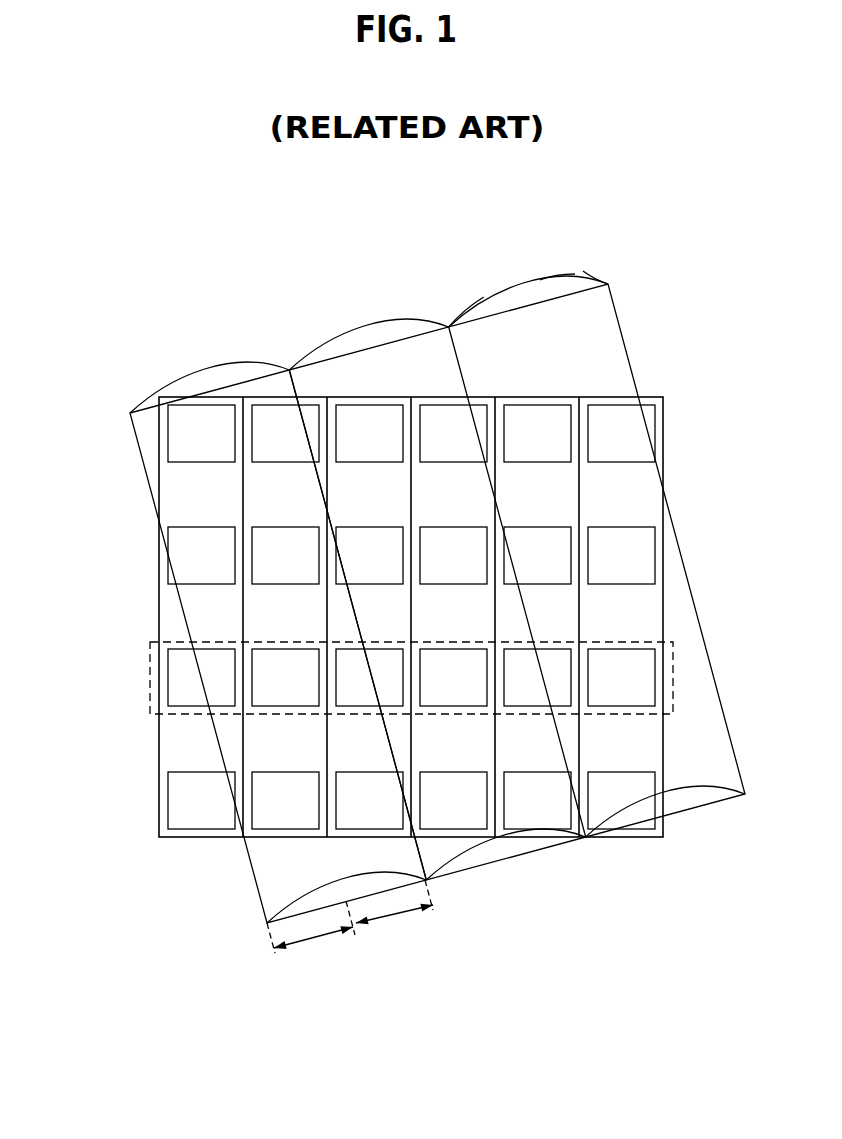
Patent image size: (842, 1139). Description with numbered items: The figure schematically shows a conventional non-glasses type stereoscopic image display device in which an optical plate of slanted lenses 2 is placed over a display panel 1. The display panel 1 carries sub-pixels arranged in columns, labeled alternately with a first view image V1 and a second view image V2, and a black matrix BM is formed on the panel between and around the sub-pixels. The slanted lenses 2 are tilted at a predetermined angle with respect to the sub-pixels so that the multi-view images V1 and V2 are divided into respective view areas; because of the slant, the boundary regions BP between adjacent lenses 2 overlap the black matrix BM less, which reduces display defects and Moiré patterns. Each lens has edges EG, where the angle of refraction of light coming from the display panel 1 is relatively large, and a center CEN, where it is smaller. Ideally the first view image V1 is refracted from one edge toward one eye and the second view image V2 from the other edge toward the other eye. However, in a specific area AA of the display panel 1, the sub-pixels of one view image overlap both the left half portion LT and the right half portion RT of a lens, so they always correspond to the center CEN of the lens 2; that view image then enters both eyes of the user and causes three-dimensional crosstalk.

The display panel 1 is at (370, 617).
The slanted lenses 2 is at (637, 309).
The first view image V1 is at (411, 617).
The second view image V2 is at (411, 617).
The specific area AA is at (150, 677).
The black matrix BM is at (170, 744).
The boundary regions BP is at (289, 370).
The edges EG is at (465, 293).
The centers CEN is at (523, 281).
The left half portion LT is at (311, 935).
The right half portion RT is at (394, 914).